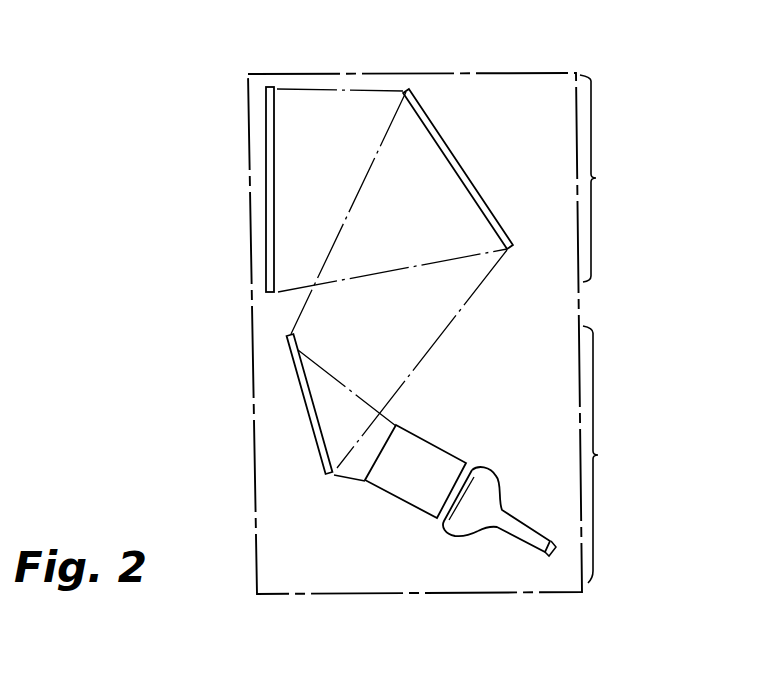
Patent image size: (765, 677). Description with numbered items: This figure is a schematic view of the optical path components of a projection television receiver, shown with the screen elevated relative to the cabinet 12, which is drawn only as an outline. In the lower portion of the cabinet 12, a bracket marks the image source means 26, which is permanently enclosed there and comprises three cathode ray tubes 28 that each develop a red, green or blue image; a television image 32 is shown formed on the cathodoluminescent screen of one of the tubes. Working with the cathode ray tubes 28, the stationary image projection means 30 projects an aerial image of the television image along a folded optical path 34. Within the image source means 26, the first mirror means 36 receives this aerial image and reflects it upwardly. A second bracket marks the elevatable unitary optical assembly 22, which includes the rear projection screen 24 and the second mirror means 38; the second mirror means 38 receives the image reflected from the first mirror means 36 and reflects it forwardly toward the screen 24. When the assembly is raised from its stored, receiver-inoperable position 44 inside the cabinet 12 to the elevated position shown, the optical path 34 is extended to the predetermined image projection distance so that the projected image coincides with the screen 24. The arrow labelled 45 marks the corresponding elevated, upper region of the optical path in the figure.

The cabinet 12 is at (312, 596).
The elevatable unitary optical assembly 22 is at (596, 178).
The rear projection screen 24 is at (266, 113).
The image source means 26 is at (598, 455).
The cathode ray tube 28 is at (484, 546).
The stationary image projection means 30 is at (405, 505).
The television image 32 is at (487, 467).
The folded optical path 34 is at (472, 306).
The first mirror means 36 is at (301, 365).
The second mirror means 38 is at (427, 130).
The first receiver-inoperable position 44 is at (250, 399).
The upper optical path 45 is at (248, 197).